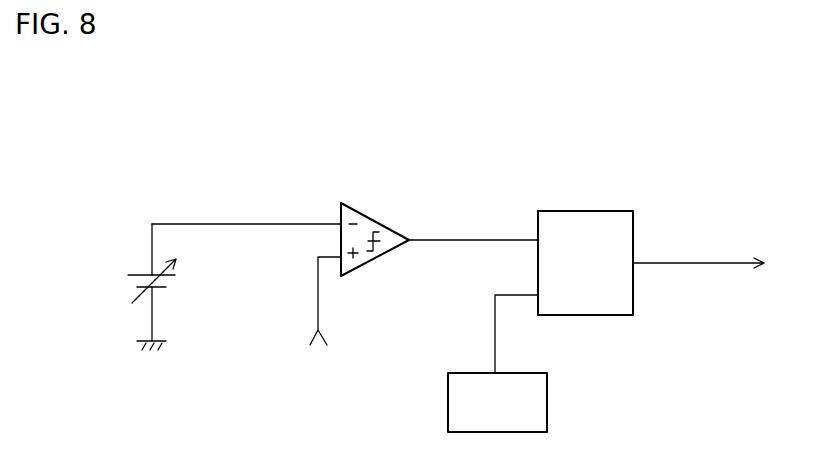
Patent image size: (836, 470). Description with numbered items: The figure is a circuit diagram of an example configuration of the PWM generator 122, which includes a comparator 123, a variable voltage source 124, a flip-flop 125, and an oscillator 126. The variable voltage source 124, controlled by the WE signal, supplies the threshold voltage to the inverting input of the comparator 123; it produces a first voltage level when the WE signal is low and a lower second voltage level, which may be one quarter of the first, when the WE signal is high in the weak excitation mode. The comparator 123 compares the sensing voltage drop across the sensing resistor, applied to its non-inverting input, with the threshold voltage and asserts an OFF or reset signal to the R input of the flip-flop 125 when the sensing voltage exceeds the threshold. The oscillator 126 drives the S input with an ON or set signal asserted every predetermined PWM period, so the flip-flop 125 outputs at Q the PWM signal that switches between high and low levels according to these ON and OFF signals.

The PWM generator 122 is at (678, 139).
The comparator 123 is at (372, 220).
The variable voltage source 124 is at (182, 285).
The flip-flop 125 is at (598, 210).
The oscillator 126 is at (547, 400).